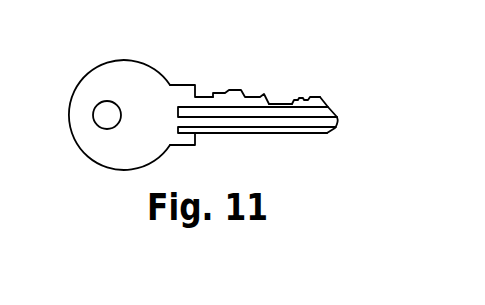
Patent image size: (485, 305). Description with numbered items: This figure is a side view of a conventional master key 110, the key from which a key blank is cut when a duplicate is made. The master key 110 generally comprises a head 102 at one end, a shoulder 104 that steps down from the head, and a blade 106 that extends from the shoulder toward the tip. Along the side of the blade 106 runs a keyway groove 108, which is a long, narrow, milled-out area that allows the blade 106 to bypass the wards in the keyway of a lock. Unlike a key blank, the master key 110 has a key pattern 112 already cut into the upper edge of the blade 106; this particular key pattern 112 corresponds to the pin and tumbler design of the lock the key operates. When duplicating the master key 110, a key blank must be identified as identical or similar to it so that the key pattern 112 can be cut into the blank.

The head 102 is at (78, 147).
The shoulder 104 is at (181, 145).
The blade 106 is at (253, 134).
The keyway groove 108 is at (322, 118).
The master key 110 is at (246, 79).
The key pattern 112 is at (283, 104).